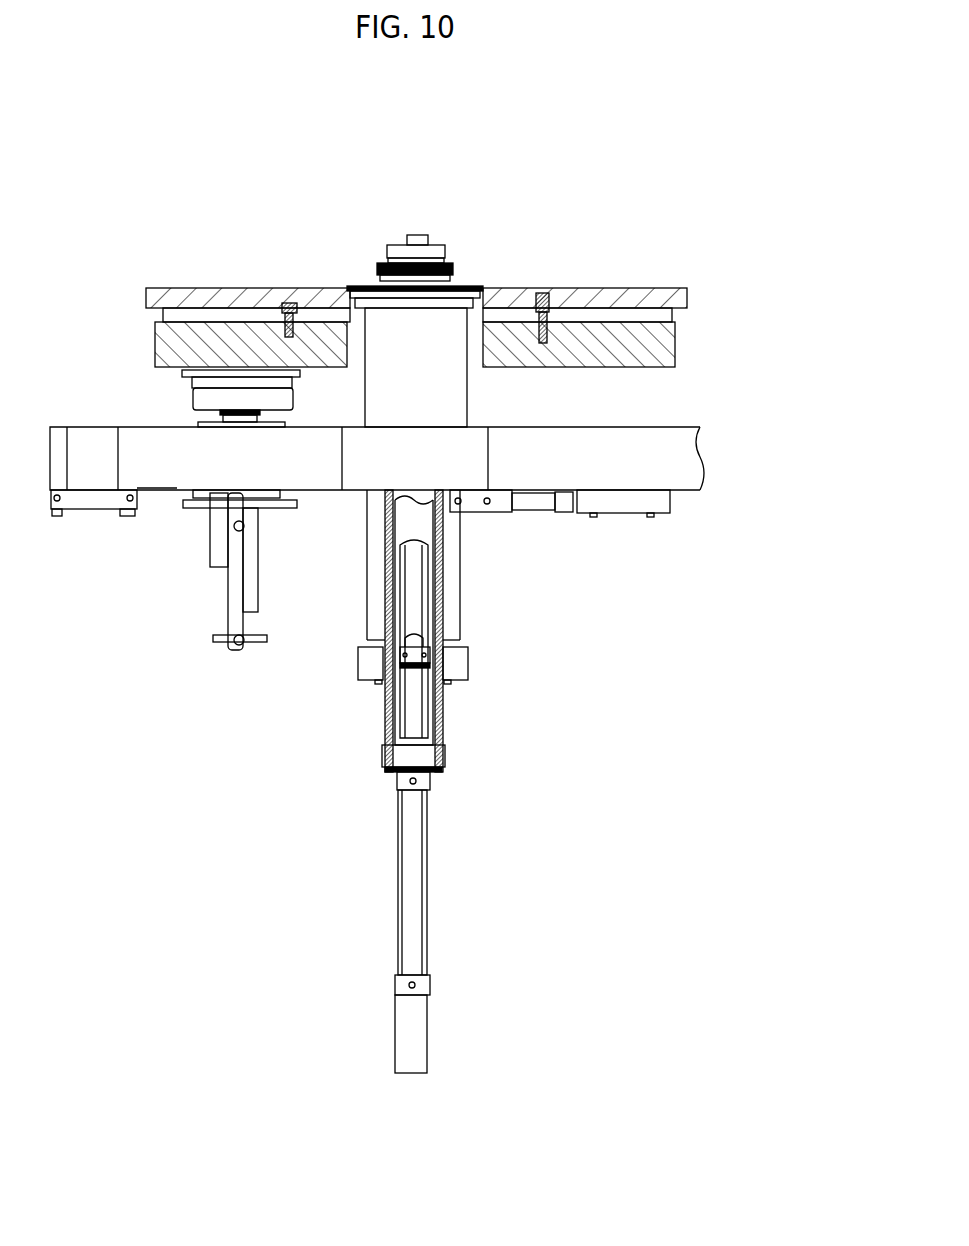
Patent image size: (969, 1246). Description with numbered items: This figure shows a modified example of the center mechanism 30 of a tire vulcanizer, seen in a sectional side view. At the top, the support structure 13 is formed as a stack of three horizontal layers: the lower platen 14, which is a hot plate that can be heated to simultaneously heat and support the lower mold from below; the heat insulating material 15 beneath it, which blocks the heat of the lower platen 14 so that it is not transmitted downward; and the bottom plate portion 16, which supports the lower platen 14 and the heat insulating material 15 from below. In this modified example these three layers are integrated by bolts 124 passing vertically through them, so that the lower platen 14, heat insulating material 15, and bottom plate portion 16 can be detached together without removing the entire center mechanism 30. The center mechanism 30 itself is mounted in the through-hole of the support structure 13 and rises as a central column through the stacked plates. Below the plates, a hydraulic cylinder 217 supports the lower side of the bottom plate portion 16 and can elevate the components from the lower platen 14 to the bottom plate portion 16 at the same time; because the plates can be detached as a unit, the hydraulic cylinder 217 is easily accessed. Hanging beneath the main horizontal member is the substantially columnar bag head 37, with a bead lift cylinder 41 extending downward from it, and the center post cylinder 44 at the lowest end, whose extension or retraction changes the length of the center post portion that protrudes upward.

The support structure 13 is at (444, 276).
The lower platen 14 is at (680, 300).
The heat insulating material 15 is at (668, 314).
The bottom plate portion 16 is at (663, 350).
The center mechanism 30 is at (449, 242).
The bolts 124 is at (541, 292).
The hydraulic cylinder 217 is at (200, 400).
The bag head 37 is at (462, 562).
The bead lift cylinders 41 is at (415, 873).
The center post cylinder 44 is at (415, 1031).